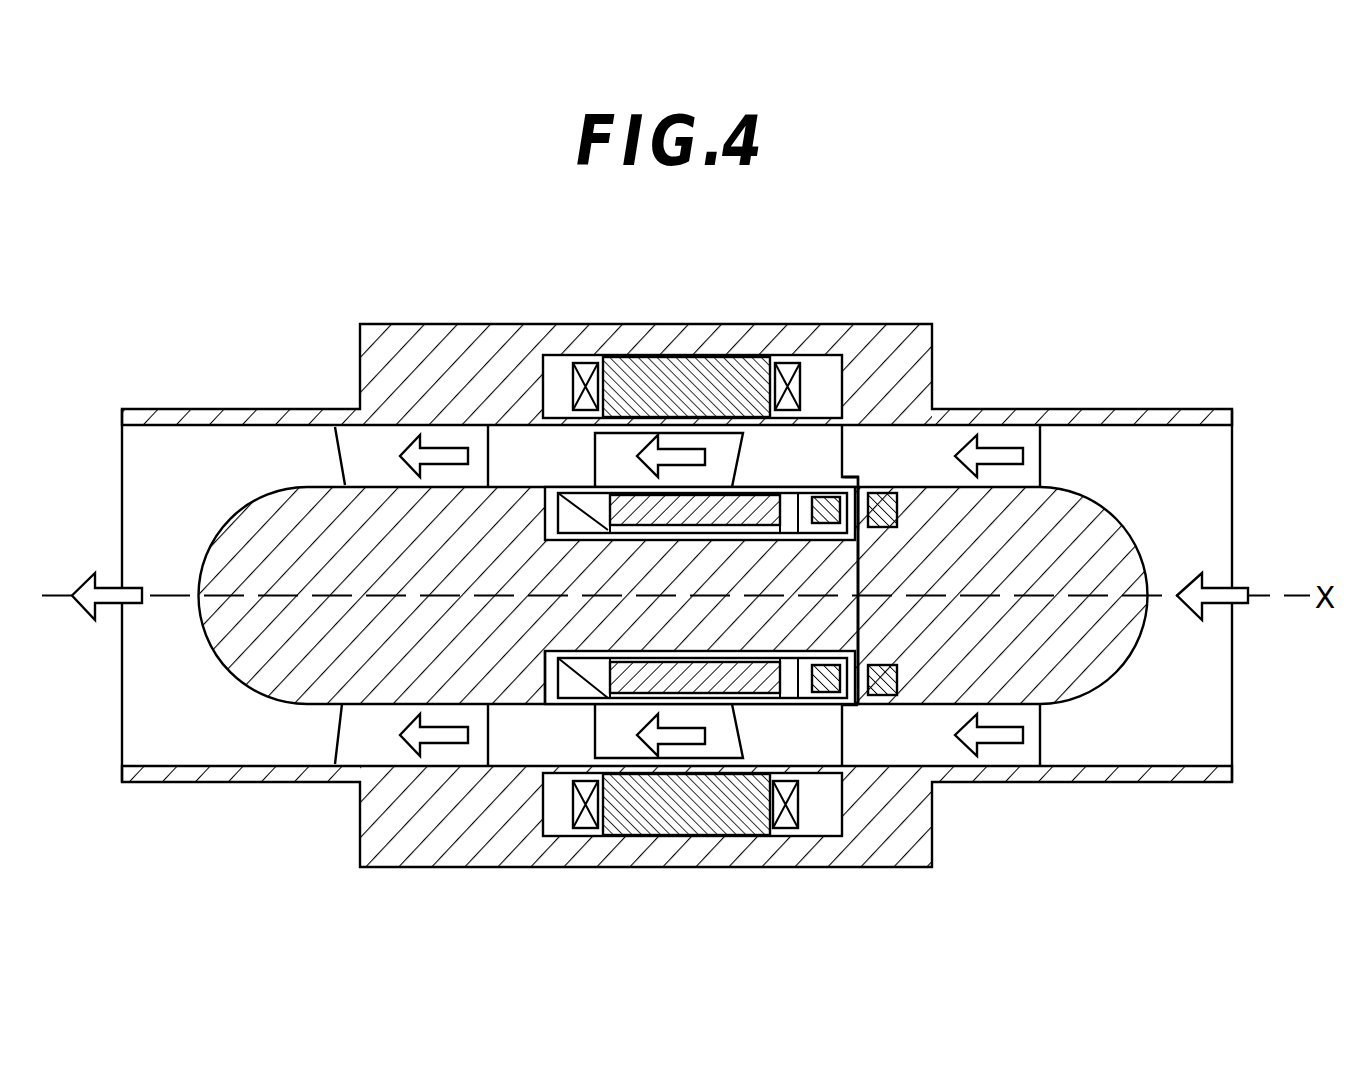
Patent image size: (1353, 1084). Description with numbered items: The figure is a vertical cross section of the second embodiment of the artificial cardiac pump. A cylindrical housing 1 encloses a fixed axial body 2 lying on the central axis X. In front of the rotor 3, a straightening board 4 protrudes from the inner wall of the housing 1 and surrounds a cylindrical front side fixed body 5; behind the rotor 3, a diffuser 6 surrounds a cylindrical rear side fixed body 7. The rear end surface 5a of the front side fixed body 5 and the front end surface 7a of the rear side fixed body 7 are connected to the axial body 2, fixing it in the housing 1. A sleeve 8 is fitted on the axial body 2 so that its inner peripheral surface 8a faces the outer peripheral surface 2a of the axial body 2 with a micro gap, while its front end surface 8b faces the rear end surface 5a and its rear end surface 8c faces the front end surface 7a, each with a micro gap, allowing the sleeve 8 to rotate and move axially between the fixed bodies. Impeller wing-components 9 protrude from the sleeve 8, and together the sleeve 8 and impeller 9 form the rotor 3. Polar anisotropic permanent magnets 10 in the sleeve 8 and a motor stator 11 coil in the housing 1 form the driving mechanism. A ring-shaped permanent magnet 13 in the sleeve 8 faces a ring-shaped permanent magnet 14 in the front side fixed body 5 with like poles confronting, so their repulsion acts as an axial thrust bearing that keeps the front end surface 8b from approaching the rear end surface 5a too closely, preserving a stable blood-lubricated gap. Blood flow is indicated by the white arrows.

The cylindrical housing 1 is at (903, 327).
The fixed axial body 2 is at (805, 483).
The outer peripheral surface 2a is at (797, 555).
The rotor 3 is at (546, 462).
The straightening board 4 is at (932, 442).
The front side fixed body 5 is at (1098, 518).
The rear end surface 5a is at (883, 697).
The diffuser 6 is at (375, 452).
The rear side fixed body 7 is at (240, 558).
The front end surface 7a is at (547, 683).
The sleeve 8 is at (577, 490).
The inner peripheral surface 8a is at (800, 667).
The front end surface 8b is at (850, 680).
The rear end surface 8c is at (580, 697).
The impeller wing-components 9 is at (622, 447).
The polar anisotropic permanent magnets 10 is at (713, 505).
The motor stator 11 is at (683, 382).
The permanent magnet 13 is at (843, 480).
The permanent magnet 14 is at (891, 483).